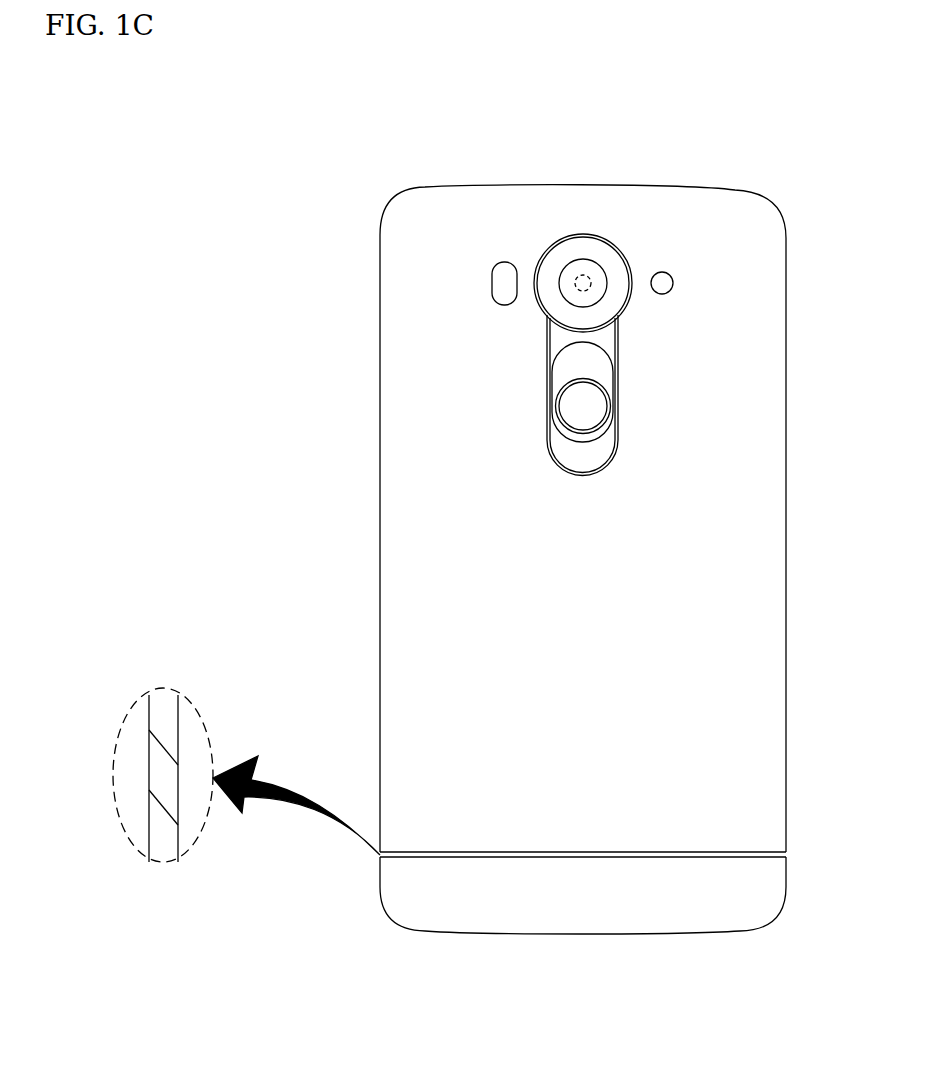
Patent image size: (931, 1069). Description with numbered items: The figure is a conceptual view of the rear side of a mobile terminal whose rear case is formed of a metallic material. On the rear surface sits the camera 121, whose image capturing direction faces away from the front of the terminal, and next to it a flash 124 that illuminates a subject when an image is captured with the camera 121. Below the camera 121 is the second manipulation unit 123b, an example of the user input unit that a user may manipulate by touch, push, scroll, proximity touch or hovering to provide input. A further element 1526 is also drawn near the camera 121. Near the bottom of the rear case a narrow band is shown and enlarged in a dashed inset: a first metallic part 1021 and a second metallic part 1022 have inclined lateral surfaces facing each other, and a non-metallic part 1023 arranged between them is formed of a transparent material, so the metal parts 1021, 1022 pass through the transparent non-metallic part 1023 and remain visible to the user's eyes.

The first metallic part 1021 is at (770, 748).
The second metallic part 1022 is at (772, 898).
The non-metallic part 1023 is at (770, 853).
The flash 1526 is at (505, 262).
The camera 121 is at (583, 283).
The flash 124 is at (662, 272).
The second manipulation unit 123b is at (592, 409).